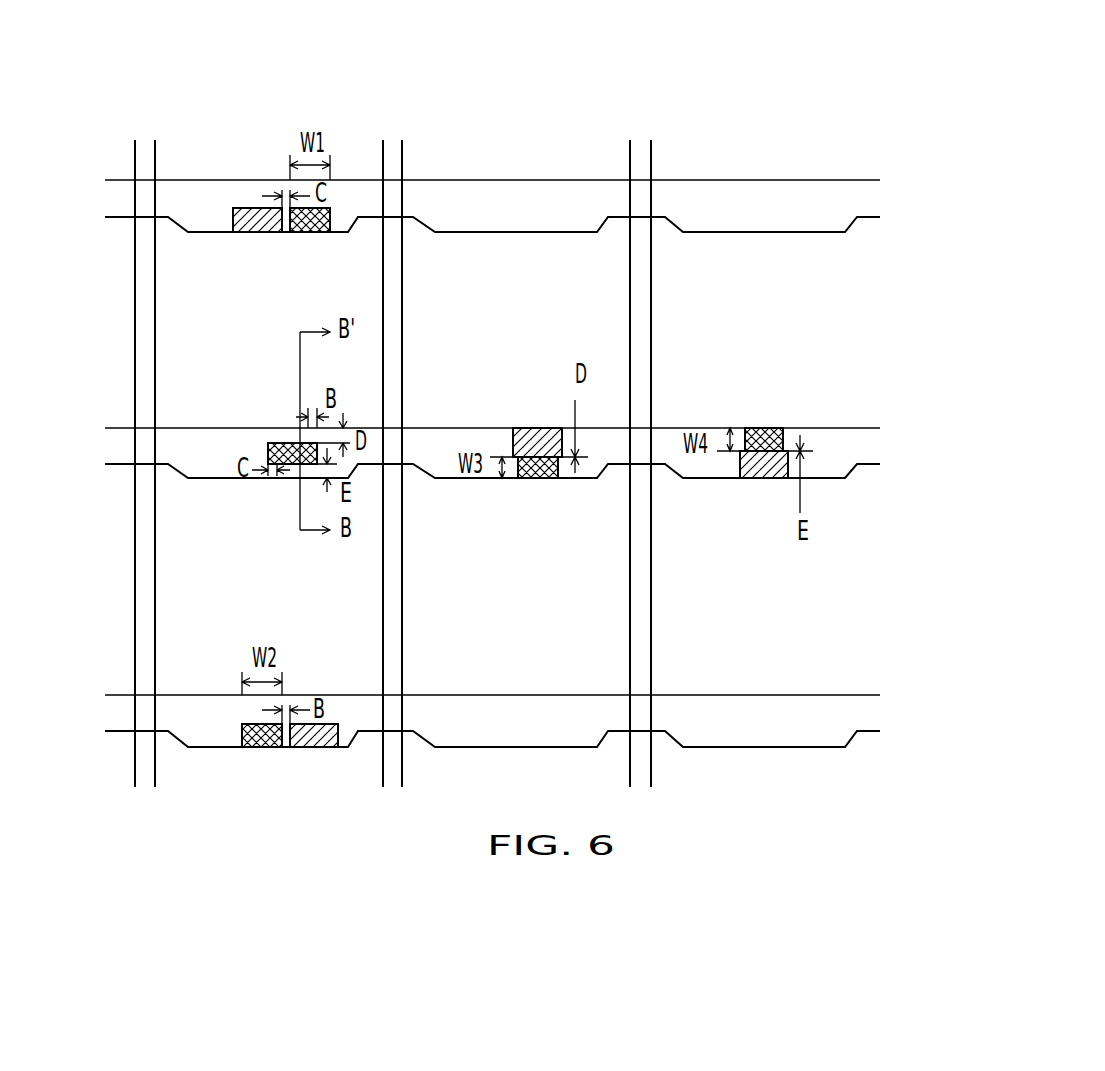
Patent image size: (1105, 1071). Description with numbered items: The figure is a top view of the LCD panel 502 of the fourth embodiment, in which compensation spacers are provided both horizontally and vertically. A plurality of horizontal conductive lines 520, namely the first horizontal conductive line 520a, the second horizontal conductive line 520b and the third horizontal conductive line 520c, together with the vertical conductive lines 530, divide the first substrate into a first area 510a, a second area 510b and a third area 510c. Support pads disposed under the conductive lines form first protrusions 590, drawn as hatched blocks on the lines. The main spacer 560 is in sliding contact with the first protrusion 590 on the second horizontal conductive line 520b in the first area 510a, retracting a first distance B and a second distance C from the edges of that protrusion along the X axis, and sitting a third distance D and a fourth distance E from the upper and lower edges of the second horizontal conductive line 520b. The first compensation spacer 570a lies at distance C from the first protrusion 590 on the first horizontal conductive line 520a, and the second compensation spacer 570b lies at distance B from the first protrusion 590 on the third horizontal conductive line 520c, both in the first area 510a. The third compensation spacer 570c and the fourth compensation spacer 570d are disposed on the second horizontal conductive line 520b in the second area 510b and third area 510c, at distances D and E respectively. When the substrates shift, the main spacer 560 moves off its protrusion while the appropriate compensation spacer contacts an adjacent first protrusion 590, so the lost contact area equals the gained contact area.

The LCD panel 502 is at (1104, 729).
The first area 510a is at (270, 119).
The second area 510b is at (517, 118).
The third area 510c is at (790, 118).
The horizontal conductive lines 520 is at (577, 463).
The first horizontal conductive line 520a is at (862, 201).
The second horizontal conductive line 520b is at (862, 445).
The third horizontal conductive line 520c is at (538, 718).
The vertical conductive lines 530 is at (143, 148).
The main spacer 560 is at (292, 467).
The first compensation spacer 570a is at (330, 220).
The second compensation spacer 570b is at (257, 747).
The third compensation spacer 570c is at (540, 478).
The fourth compensation spacer 570d is at (770, 428).
The first protrusions 590 is at (262, 232).